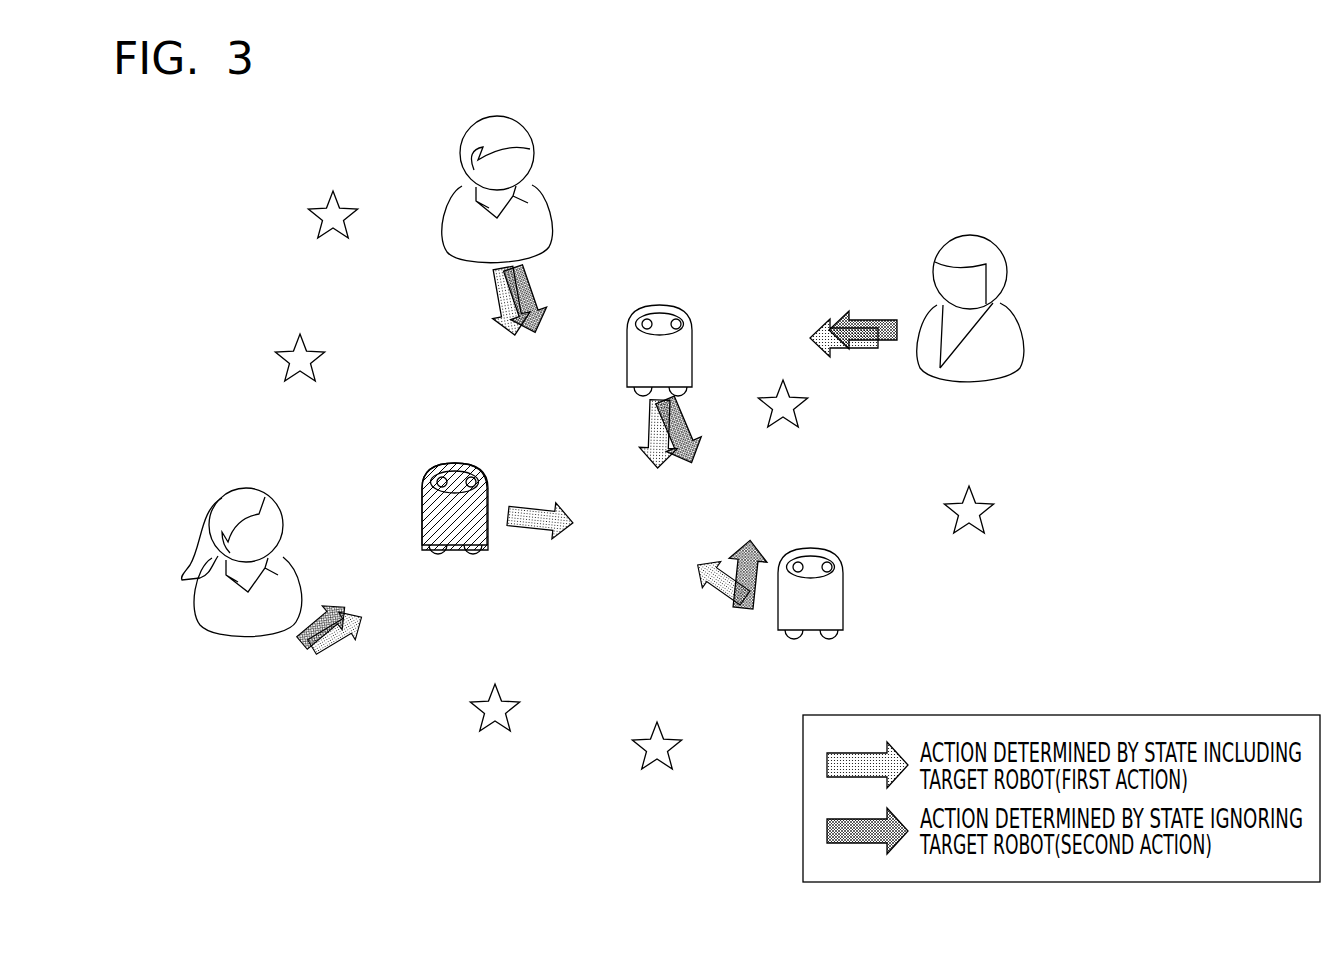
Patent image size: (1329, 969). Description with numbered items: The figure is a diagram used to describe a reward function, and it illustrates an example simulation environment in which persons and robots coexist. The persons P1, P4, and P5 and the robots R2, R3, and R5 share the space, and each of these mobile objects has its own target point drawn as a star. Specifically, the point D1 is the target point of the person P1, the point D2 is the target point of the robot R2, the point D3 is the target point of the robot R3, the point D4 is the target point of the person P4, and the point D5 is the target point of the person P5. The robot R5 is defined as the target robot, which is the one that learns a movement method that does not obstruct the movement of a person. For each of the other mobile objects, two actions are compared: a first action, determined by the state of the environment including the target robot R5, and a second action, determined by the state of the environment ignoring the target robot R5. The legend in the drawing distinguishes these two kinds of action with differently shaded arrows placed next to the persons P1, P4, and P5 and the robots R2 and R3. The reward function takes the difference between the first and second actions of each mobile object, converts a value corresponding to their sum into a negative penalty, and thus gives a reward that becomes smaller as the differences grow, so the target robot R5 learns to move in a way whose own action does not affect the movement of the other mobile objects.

The person P1 is at (443, 218).
The person P4 is at (193, 606).
The person P5 is at (1027, 340).
The robot R2 is at (694, 361).
The robot R3 is at (847, 607).
The target robot R5 is at (420, 522).
The target point D1 is at (476, 725).
The target point D2 is at (640, 761).
The target point D3 is at (316, 230).
The target point D4 is at (798, 419).
The target point D5 is at (285, 373).